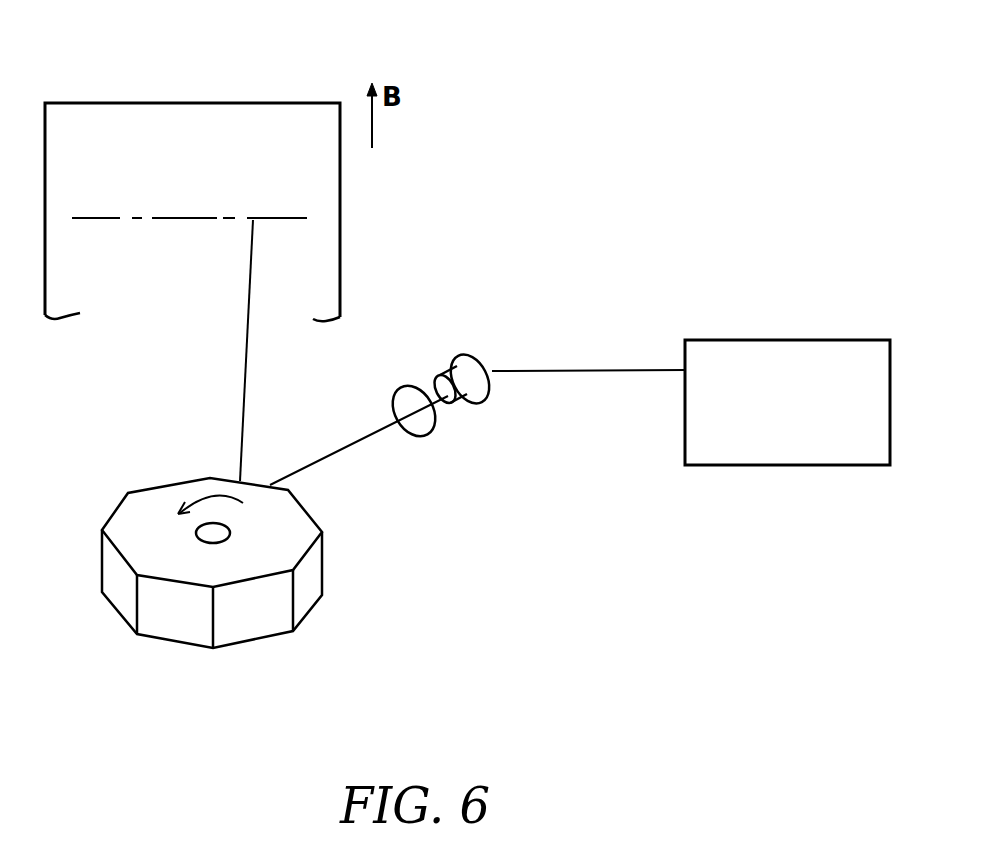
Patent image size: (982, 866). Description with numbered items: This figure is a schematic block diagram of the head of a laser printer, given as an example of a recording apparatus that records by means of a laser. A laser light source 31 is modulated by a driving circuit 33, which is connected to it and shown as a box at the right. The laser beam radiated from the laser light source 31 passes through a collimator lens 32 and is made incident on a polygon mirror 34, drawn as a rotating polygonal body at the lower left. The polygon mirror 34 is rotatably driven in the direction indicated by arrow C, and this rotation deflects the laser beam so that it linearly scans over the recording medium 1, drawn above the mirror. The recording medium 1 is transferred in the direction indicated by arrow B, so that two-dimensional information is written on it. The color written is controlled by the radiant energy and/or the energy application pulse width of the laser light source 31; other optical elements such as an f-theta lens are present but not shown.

The recording medium 1 is at (249, 99).
The laser light source 31 is at (445, 374).
The collimator lens 32 is at (393, 398).
The driving circuit 33 is at (850, 338).
The polygon mirror 34 is at (167, 620).